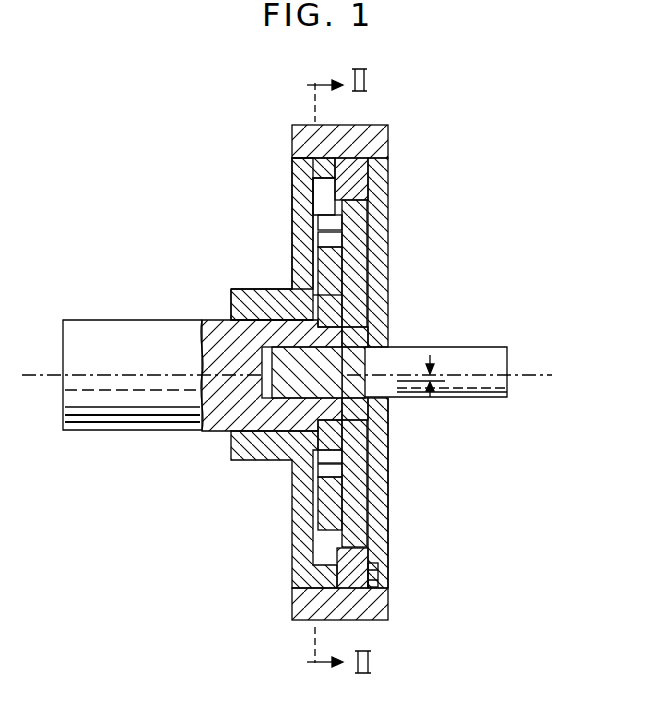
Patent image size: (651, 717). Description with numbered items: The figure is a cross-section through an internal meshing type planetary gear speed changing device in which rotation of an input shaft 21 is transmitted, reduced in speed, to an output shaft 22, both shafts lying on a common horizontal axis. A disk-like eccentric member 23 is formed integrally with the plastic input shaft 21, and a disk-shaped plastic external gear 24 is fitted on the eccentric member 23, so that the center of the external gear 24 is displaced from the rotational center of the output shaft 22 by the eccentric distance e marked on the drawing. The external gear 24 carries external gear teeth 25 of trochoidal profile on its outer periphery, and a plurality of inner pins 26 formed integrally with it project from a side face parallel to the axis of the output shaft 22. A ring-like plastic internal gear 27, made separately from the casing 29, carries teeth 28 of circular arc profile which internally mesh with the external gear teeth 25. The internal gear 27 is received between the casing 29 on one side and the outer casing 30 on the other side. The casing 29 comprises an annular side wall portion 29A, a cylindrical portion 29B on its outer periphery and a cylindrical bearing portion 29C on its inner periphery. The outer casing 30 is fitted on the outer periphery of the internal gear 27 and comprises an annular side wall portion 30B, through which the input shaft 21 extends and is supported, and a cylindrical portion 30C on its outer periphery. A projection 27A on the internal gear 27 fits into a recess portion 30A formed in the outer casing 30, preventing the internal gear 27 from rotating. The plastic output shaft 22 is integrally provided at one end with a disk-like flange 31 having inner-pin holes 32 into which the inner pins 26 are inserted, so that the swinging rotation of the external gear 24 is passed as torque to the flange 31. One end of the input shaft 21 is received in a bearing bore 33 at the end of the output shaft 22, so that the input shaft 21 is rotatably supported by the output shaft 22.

The input shaft 21 is at (490, 358).
The output shaft 22 is at (93, 422).
The eccentric member 23 is at (387, 420).
The external gear 24 is at (387, 282).
The external gear teeth 25 is at (385, 217).
The inner pins 26 is at (318, 260).
The internal gear 27 is at (387, 156).
The projection 27A is at (378, 570).
The teeth 28 is at (387, 184).
The casing 29 is at (292, 230).
The side wall portion 29A is at (293, 202).
The cylindrical portion 29B is at (293, 170).
The bearing portion 29C is at (230, 297).
The outer casing 30 is at (393, 318).
The recess portion 30A is at (382, 578).
The side wall portion 30B is at (387, 530).
The cylindrical portion 30C is at (300, 608).
The flange 31 is at (350, 460).
The inner-pin holes 32 is at (318, 470).
The bearing bore 33 is at (210, 353).
The eccentric distance e is at (445, 378).